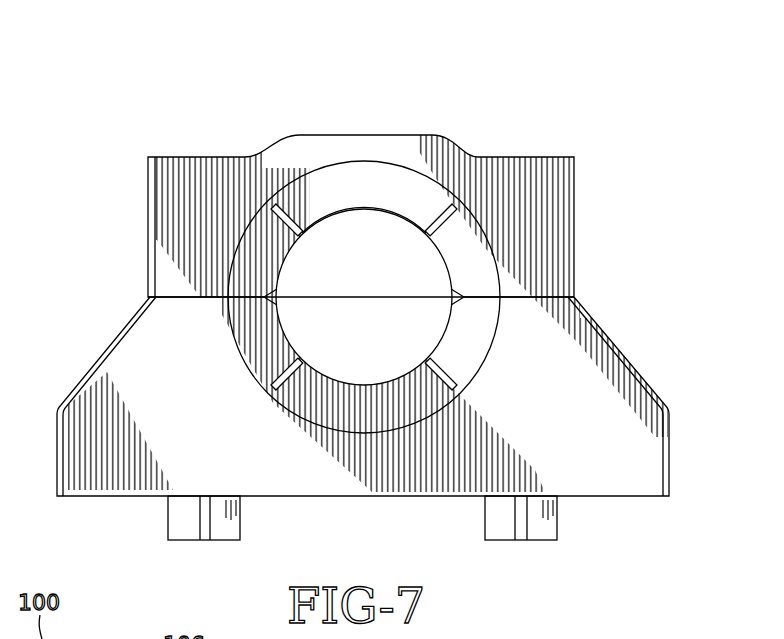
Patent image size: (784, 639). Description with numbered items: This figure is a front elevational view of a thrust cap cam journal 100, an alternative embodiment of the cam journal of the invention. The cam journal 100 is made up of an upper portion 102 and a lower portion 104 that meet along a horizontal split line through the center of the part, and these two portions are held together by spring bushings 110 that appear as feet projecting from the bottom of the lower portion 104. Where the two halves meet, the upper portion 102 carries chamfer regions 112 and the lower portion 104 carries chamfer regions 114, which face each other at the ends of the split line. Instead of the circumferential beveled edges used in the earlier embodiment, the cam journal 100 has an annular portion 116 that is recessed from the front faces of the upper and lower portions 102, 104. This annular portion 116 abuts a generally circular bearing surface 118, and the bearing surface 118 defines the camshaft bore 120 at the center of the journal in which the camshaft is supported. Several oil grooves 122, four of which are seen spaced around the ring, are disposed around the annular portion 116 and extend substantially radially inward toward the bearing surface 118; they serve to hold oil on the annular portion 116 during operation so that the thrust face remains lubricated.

The cam journal 100 is at (343, 291).
The upper portion 102 is at (185, 206).
The lower portion 104 is at (158, 354).
The spring bushings 110 is at (180, 520).
The chamfer regions 112 is at (270, 296).
The chamfer regions 114 is at (271, 302).
The annular portion 116 is at (460, 345).
The bearing surface 118 is at (302, 232).
The camshaft bore 120 is at (423, 268).
The oil grooves 122 is at (440, 208).